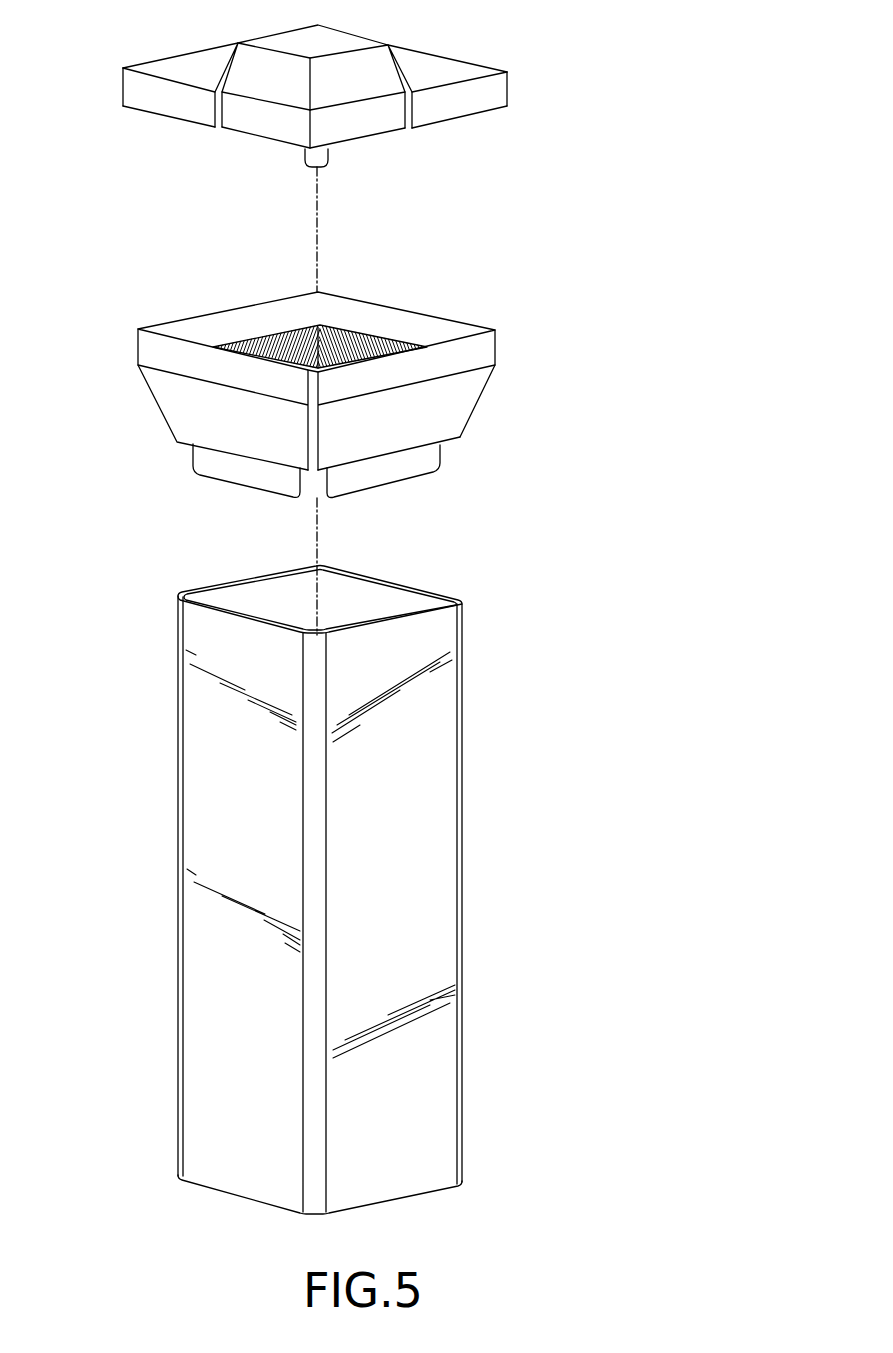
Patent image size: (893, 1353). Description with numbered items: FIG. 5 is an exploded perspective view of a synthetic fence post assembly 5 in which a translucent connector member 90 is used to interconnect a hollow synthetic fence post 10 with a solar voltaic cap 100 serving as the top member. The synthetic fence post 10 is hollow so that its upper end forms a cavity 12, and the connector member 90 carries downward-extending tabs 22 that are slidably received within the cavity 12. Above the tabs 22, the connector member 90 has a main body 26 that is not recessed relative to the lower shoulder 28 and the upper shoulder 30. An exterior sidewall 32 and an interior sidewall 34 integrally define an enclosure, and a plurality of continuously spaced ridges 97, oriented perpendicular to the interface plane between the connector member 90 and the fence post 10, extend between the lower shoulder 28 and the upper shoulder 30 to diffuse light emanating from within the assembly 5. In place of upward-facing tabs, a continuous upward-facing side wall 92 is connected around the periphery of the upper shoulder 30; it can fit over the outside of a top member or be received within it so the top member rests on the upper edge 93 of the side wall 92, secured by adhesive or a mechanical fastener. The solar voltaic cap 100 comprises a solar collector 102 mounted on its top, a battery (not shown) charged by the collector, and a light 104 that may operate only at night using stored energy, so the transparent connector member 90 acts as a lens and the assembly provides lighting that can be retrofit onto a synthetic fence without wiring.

The synthetic fence post assembly 5 is at (682, 150).
The synthetic fence post 10 is at (461, 858).
The cavity 12 is at (383, 600).
The downward-facing tabs 22 is at (400, 483).
The main body 26 is at (133, 367).
The lower shoulder 28 is at (178, 442).
The upper shoulder 30 is at (495, 365).
The exterior sidewall 32 is at (423, 415).
The interior sidewall 34 is at (299, 338).
The connector member 90 is at (545, 359).
The upward-facing side wall 92 is at (133, 328).
The upper edge 93 is at (427, 314).
The ridges 97 is at (258, 338).
The solar voltaic cap 100 is at (490, 63).
The solar collector 102 is at (348, 33).
The light 104 is at (330, 157).